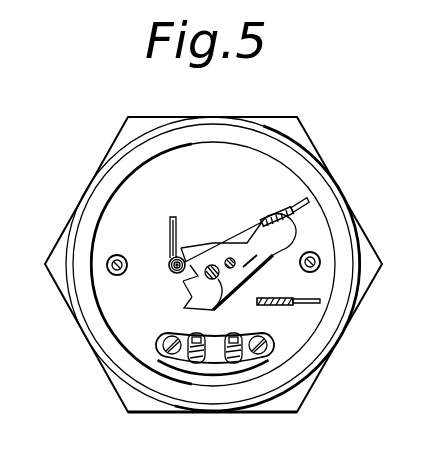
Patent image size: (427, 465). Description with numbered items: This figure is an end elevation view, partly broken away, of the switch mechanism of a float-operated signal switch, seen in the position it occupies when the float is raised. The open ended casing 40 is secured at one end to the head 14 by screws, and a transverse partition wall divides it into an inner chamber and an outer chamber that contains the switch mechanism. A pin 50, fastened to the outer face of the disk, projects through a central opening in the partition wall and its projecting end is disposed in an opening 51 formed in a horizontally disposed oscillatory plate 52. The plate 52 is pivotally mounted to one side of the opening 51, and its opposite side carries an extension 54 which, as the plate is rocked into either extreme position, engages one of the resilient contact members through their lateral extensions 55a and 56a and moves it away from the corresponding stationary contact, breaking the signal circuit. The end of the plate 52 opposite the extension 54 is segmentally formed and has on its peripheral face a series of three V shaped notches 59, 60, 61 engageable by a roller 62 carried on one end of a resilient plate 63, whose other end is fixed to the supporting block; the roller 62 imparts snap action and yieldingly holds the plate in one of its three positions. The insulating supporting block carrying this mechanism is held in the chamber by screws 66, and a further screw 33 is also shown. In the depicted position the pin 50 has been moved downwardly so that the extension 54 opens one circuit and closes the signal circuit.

The head 14 is at (137, 131).
The screw 33 is at (235, 266).
The casing 40 is at (97, 322).
The pin 50 is at (215, 337).
The opening 51 is at (209, 266).
The oscillatory plate 52 is at (224, 251).
The extension 54 is at (291, 233).
The lateral extension 55a is at (277, 215).
The lateral extension 56a is at (287, 305).
The V shaped notch 59 is at (180, 279).
The V shaped notch 60 is at (186, 294).
The V shaped notch 61 is at (206, 307).
The roller 62 is at (169, 268).
The resilient plate 63 is at (175, 216).
The screws 66 is at (110, 263).